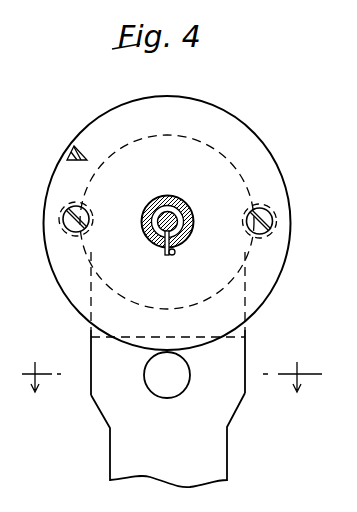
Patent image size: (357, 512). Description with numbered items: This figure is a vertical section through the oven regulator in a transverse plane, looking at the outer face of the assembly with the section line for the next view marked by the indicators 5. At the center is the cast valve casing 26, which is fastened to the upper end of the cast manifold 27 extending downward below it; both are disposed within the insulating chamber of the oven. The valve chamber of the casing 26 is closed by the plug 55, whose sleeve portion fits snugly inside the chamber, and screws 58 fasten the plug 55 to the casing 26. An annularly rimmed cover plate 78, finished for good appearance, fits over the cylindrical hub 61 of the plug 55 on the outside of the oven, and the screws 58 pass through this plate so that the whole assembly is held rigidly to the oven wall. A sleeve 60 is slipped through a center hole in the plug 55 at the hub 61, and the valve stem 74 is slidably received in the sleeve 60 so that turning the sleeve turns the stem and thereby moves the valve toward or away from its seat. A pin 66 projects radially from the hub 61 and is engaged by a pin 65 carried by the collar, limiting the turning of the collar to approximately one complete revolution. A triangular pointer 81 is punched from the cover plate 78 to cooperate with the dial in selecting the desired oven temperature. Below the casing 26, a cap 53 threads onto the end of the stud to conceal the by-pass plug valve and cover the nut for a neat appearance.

The cover plate 78 is at (221, 117).
The plug 55 is at (274, 157).
The triangular pointer 81 is at (74, 146).
The sleeve 60 is at (150, 237).
The cylindrical hub 61 is at (190, 218).
The valve stem 74 is at (167, 212).
The pin 66 is at (165, 255).
The pin 65 is at (176, 254).
The screws 58 is at (275, 227).
The valve casing 26 is at (262, 298).
The manifold 27 is at (213, 456).
The cap 53 is at (183, 382).
The section line 5- 5 is at (167, 378).